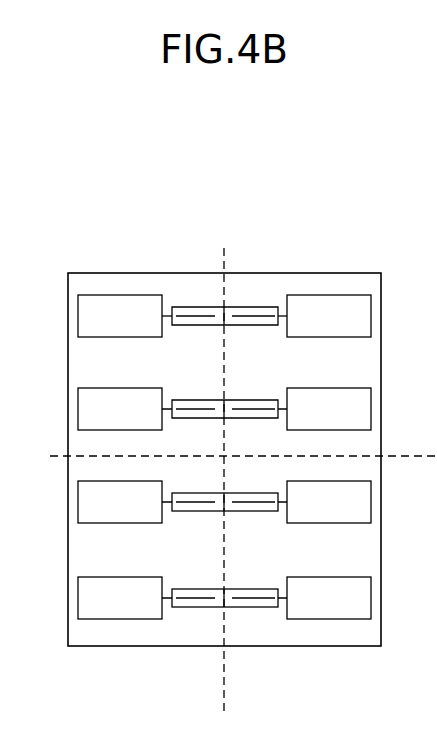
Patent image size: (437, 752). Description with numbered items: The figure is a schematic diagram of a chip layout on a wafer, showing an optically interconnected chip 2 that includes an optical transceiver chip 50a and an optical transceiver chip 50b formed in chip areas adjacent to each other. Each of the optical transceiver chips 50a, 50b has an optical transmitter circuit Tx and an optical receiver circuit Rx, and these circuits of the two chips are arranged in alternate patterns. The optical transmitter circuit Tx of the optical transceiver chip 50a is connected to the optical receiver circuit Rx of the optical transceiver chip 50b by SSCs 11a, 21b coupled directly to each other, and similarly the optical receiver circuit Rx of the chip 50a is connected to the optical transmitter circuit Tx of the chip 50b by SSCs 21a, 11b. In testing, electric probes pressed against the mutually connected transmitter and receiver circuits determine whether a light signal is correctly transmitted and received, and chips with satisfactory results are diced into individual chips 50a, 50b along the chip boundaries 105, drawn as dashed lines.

The optically interconnected chip 2 is at (382, 228).
The optical transceiver chip 50a is at (100, 285).
The optical transceiver chip 50b is at (334, 284).
The SSC 11a is at (186, 306).
The SSC 11b is at (257, 400).
The SSC 21a is at (186, 400).
The SSC 21b is at (256, 306).
The chip boundary 105 is at (414, 452).